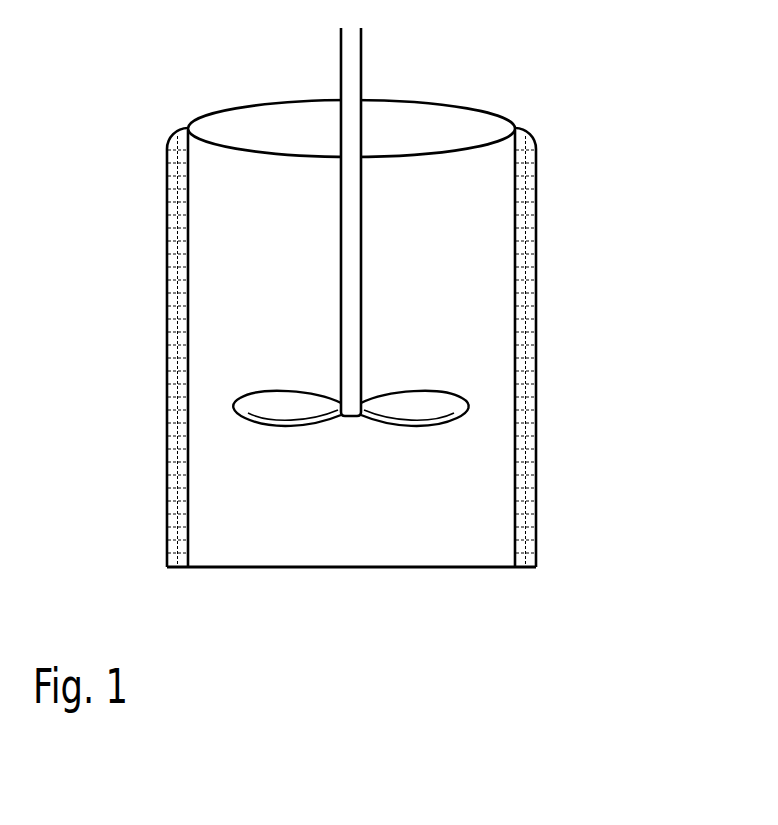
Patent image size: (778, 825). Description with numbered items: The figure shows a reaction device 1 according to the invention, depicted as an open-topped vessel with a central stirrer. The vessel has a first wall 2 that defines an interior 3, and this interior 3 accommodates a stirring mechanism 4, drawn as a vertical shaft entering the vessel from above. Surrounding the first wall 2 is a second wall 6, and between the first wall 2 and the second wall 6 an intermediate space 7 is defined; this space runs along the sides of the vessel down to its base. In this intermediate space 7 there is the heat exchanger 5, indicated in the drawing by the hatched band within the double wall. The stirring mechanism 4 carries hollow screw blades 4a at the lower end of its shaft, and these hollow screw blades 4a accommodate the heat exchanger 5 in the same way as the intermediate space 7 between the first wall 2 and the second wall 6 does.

The reaction device 1 is at (612, 197).
The first wall 2 is at (520, 323).
The interior 3 is at (207, 340).
The stirring mechanism 4 is at (343, 300).
The hollow screw blades 4a is at (252, 406).
The heat exchanger 5 is at (262, 430).
The second wall 6 is at (535, 445).
The intermediate space 7 is at (525, 569).